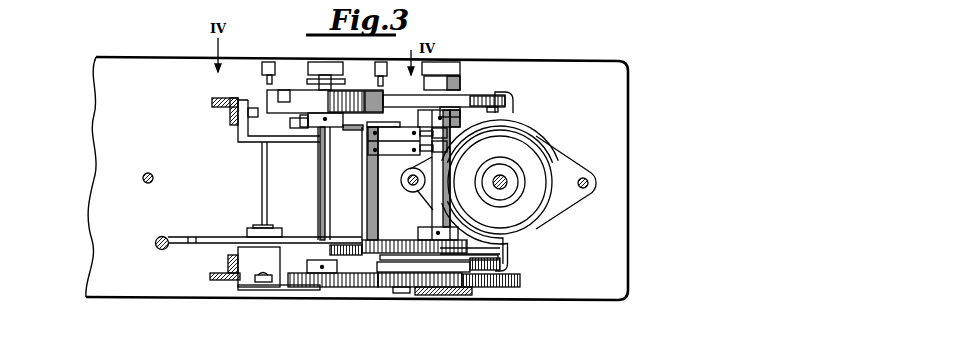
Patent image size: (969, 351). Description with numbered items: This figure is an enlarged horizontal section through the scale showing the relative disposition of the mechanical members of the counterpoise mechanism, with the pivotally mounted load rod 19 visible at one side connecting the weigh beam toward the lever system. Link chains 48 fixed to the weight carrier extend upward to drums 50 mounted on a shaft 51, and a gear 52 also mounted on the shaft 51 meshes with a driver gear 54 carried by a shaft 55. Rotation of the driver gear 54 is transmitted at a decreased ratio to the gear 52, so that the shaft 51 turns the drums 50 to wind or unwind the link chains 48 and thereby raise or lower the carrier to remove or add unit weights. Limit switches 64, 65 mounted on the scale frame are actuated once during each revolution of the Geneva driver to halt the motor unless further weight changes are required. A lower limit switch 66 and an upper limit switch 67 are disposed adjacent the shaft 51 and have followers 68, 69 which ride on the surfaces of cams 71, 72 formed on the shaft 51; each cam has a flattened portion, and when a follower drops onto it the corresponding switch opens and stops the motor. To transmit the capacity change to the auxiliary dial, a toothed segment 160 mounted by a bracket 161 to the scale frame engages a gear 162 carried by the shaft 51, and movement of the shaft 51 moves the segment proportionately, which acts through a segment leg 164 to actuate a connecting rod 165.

The load rod 19 is at (143, 177).
The link chains 48 is at (495, 93).
The drums 50 is at (470, 93).
The shaft 51 is at (267, 94).
The gear 52 is at (487, 286).
The driver gear 54 is at (300, 282).
The shaft 55 is at (318, 192).
The limit switch 64 is at (383, 66).
The limit switch 65 is at (268, 62).
The lower limit switch 66 is at (400, 157).
The upper limit switch 67 is at (387, 132).
The follower 68 is at (455, 157).
The follower 69 is at (455, 137).
The cam 71 is at (457, 167).
The cam 72 is at (452, 147).
The toothed segment 160 is at (369, 253).
The bracket 161 is at (248, 275).
The gear 162 is at (512, 254).
The segment leg 164 is at (192, 244).
The connecting rod 165 is at (155, 242).